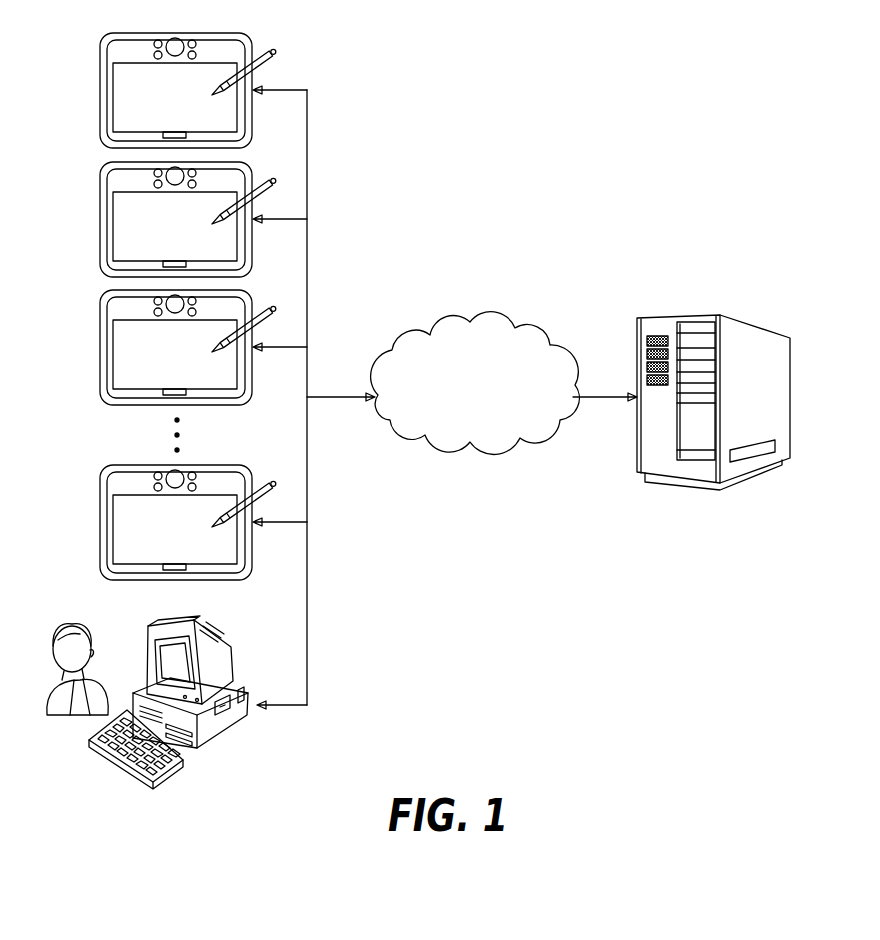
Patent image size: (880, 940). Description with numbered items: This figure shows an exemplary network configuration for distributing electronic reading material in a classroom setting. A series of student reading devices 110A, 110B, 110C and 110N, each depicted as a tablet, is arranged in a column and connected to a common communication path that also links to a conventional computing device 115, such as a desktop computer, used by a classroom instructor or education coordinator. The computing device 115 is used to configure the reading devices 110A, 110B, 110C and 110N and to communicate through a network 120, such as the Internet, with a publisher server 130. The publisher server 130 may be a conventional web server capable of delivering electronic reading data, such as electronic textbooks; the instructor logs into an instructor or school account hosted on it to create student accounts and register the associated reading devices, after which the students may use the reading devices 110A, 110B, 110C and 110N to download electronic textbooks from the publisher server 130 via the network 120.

The reading device 110A is at (100, 101).
The reading device 110B is at (100, 225).
The reading device 110C is at (100, 347).
The reading device 110N is at (100, 525).
The computing device 115 is at (220, 733).
The network 120 is at (472, 318).
The publisher server 130 is at (690, 316).